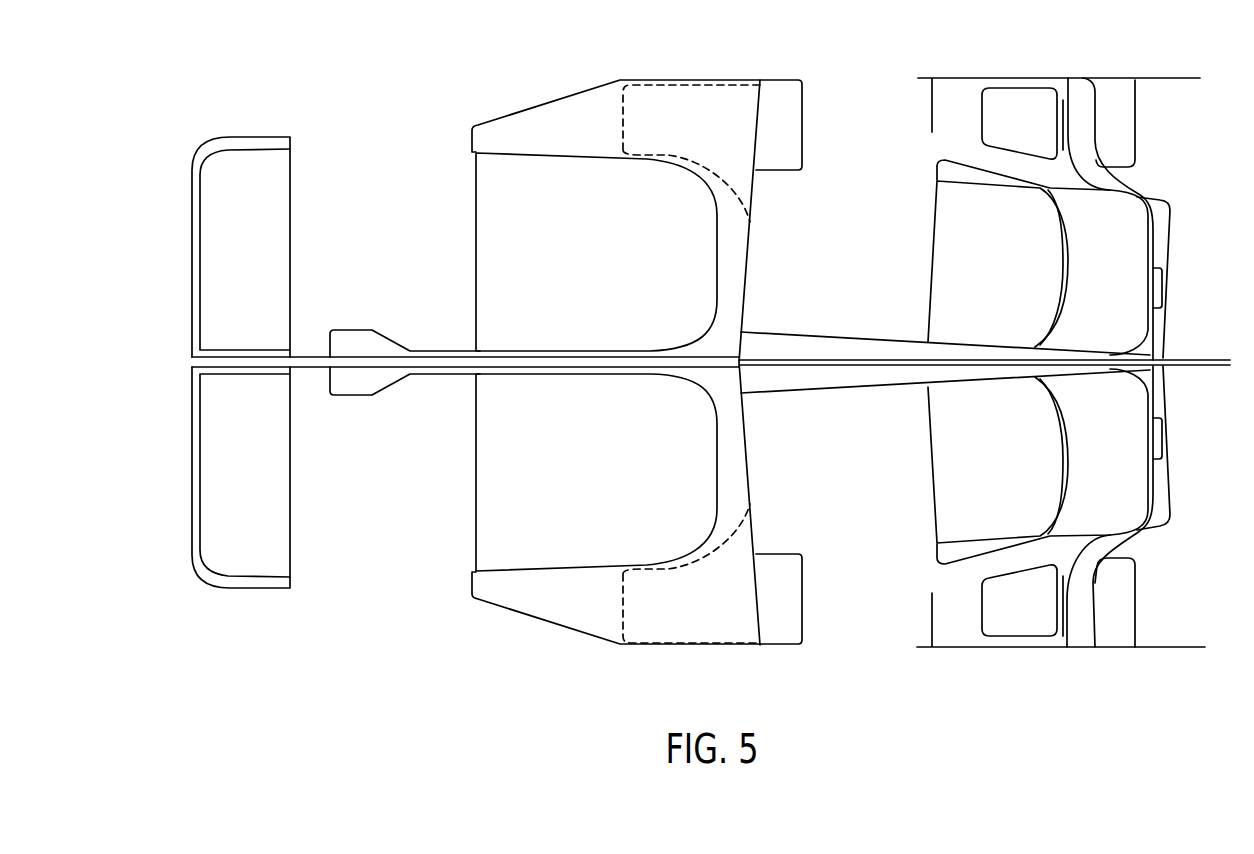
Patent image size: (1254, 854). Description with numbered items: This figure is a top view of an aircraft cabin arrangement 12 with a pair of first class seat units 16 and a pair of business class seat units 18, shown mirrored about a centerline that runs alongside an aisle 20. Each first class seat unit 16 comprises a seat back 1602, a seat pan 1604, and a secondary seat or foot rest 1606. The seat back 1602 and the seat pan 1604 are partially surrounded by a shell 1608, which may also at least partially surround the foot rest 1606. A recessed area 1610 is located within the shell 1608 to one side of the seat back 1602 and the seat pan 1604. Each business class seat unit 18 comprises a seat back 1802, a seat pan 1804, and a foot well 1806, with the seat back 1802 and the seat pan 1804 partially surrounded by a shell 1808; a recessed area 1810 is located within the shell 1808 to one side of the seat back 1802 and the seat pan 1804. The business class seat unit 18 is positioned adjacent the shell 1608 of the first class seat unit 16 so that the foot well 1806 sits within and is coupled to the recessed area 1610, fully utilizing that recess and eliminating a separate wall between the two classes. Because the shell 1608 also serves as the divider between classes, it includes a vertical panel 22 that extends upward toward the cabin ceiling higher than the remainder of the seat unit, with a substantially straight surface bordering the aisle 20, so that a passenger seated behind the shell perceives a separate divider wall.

The aircraft cabin arrangement 12 is at (184, 80).
The first class seat unit 16 is at (190, 282).
The business class seat unit 18 is at (1150, 400).
The aisle 20 is at (1125, 55).
The vertical panel 22 is at (745, 458).
The seat back 1602 is at (705, 220).
The seat pan 1604 is at (517, 270).
The foot rest 1606 is at (233, 188).
The shell 1608 is at (557, 627).
The recessed area 1610 is at (692, 605).
The seat back 1802 is at (1095, 248).
The seat pan 1804 is at (963, 290).
The foot well 1806 is at (715, 98).
The shell 1808 is at (1070, 643).
The recessed area 1810 is at (1098, 578).